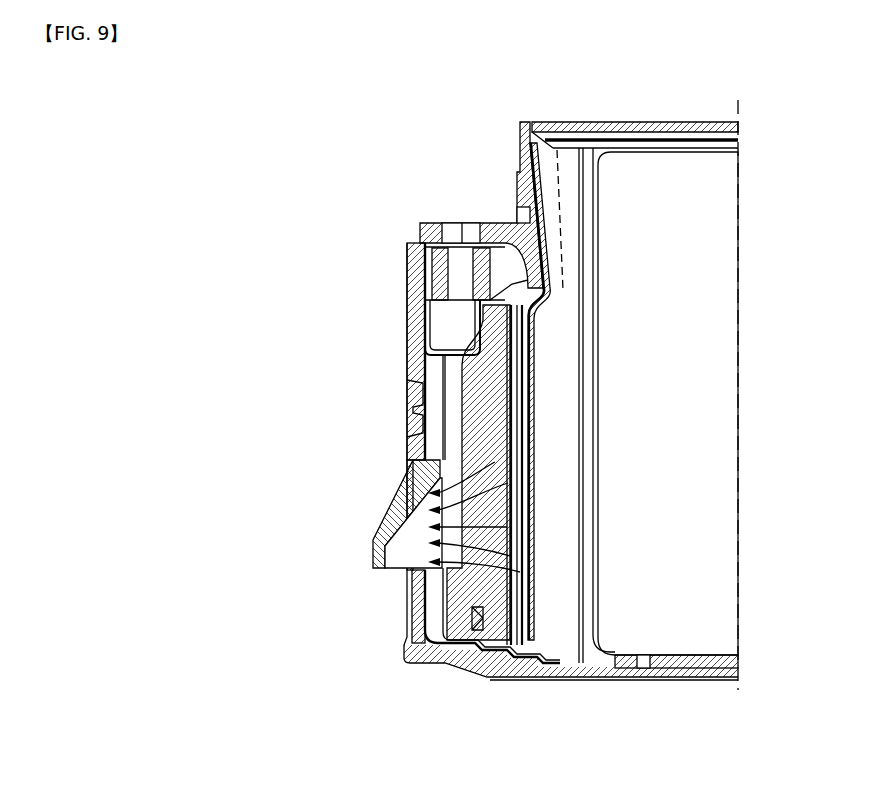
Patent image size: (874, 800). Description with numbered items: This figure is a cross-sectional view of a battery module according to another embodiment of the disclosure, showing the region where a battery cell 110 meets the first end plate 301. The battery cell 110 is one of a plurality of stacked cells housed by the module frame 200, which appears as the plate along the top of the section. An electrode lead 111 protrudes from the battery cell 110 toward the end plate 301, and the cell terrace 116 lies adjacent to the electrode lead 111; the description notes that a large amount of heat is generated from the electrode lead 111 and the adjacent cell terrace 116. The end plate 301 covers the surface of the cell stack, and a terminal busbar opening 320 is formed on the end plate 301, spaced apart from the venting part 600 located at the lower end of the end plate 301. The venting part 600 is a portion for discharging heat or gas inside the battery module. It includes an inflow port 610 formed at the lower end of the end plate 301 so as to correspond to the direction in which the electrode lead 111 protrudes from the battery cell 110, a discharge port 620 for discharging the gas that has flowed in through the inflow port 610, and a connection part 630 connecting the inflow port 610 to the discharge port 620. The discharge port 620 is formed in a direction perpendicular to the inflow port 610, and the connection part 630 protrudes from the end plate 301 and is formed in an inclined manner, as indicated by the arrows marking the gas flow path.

The module frame 200 is at (633, 122).
The terminal busbar opening 320 is at (523, 215).
The first end plate 301 is at (408, 640).
The battery cell 110 is at (675, 635).
The cell terrace 116 is at (560, 642).
The electrode lead 111 is at (507, 555).
The venting part 600 is at (388, 524).
The inflow port 610 is at (432, 518).
The discharge port 620 is at (395, 569).
The connection part 630 is at (383, 522).